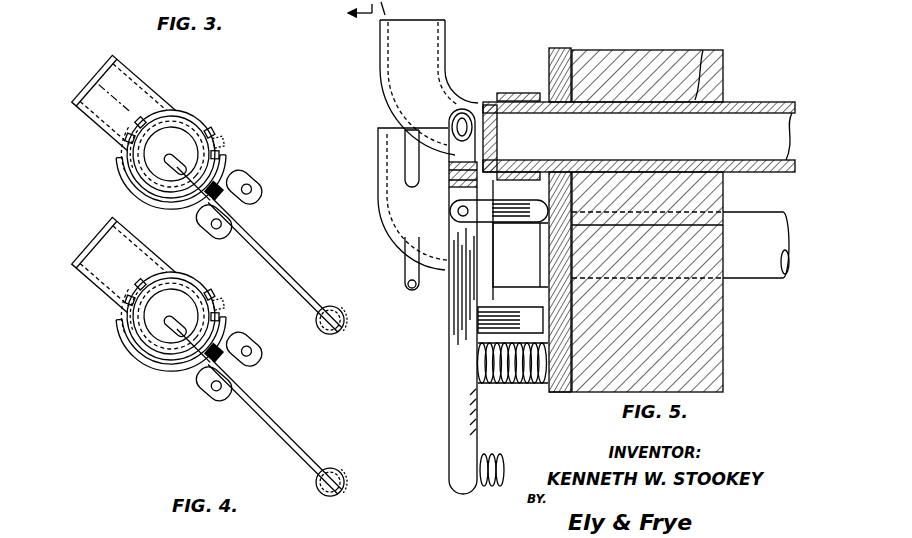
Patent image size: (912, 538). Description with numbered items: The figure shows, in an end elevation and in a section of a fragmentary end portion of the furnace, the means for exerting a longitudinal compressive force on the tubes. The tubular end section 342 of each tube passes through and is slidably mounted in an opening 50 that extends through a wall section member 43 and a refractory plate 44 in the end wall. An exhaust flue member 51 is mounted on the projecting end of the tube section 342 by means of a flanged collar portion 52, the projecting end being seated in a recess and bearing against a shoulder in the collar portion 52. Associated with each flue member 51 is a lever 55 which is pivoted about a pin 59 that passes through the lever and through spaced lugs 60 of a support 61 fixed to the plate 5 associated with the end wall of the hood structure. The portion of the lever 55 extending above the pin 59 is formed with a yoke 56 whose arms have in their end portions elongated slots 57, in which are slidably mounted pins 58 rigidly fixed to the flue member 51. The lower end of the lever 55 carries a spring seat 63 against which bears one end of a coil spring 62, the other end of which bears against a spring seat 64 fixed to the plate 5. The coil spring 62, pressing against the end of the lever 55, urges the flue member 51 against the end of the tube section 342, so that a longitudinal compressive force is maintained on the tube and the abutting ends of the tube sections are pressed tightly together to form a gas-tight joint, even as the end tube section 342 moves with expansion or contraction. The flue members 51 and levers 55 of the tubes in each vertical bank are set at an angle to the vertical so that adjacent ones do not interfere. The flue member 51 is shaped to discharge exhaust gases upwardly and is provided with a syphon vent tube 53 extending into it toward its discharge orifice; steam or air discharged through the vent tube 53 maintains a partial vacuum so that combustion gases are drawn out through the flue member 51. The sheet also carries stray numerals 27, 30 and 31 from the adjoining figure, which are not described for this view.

In FIG. 4, the plate 5 is at (60, 78).
In FIG. 5, the plate 5 is at (548, 58).
In FIG. 3, the frame member 27 is at (122, 0).
In FIG. 3, the frame member 30 is at (518, 8).
In FIG. 3, the frame member 31 is at (296, 0).
In FIG. 4, the tubular end section 342 is at (118, 150).
In FIG. 5, the tubular end section 342 is at (756, 102).
In FIG. 5, the wall section member 43 is at (673, 52).
In FIG. 5, the refractory plate 44 is at (570, 48).
In FIG. 5, the opening 50 is at (710, 52).
In FIG. 4, the exhaust flue member 51 is at (78, 108).
In FIG. 5, the exhaust flue member 51 is at (380, 52).
In FIG. 4, the flanged collar portion 52 is at (215, 164).
In FIG. 5, the flanged collar portion 52 is at (509, 92).
In FIG. 4, the syphon vent tube 53 is at (214, 146).
In FIG. 5, the syphon vent tube 53 is at (405, 146).
In FIG. 4, the lever 55 is at (280, 262).
In FIG. 5, the lever 55 is at (452, 302).
In FIG. 4, the yoke 56 is at (225, 150).
In FIG. 5, the yoke 56 is at (452, 178).
In FIG. 4, the elongated slots 57 is at (193, 116).
In FIG. 5, the elongated slots 57 is at (462, 109).
In FIG. 4, the pins 58 is at (204, 126).
In FIG. 5, the pins 58 is at (454, 124).
In FIG. 4, the pin 59 is at (246, 182).
In FIG. 5, the pin 59 is at (456, 214).
In FIG. 4, the spaced lugs 60 is at (228, 219).
In FIG. 5, the spaced lugs 60 is at (510, 222).
In FIG. 4, the support 61 is at (254, 194).
In FIG. 5, the support 61 is at (500, 276).
In FIG. 4, the coil spring 62 is at (344, 310).
In FIG. 5, the coil spring 62 is at (501, 386).
In FIG. 4, the spring seat 63 is at (322, 308).
In FIG. 5, the spring seat 63 is at (478, 354).
In FIG. 5, the spring seat 64 is at (552, 392).